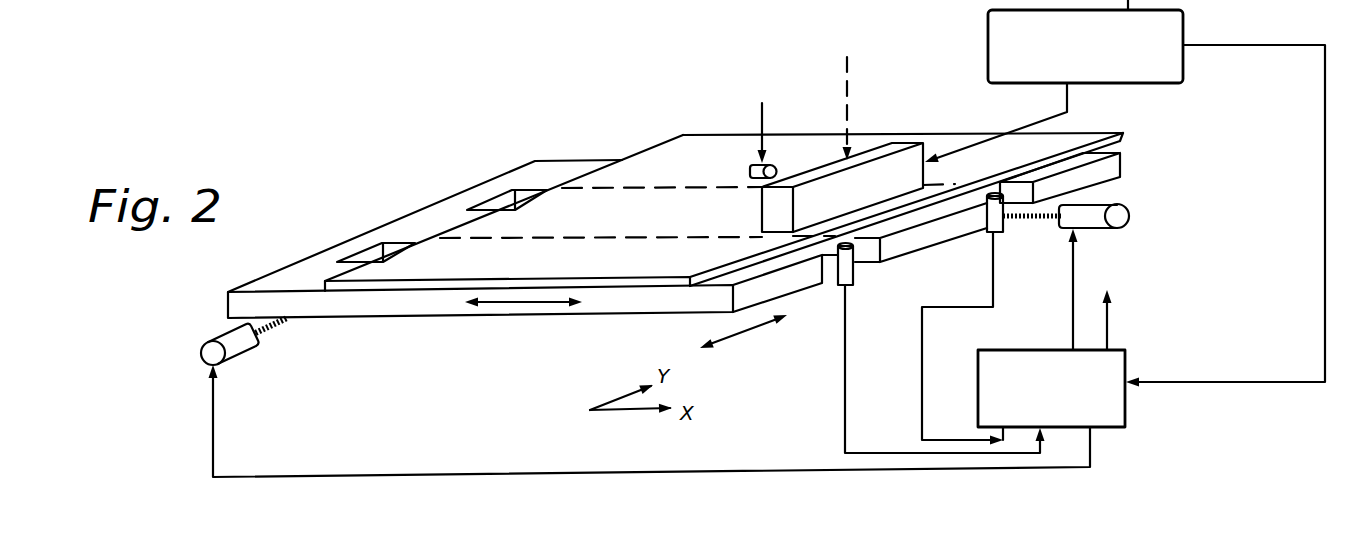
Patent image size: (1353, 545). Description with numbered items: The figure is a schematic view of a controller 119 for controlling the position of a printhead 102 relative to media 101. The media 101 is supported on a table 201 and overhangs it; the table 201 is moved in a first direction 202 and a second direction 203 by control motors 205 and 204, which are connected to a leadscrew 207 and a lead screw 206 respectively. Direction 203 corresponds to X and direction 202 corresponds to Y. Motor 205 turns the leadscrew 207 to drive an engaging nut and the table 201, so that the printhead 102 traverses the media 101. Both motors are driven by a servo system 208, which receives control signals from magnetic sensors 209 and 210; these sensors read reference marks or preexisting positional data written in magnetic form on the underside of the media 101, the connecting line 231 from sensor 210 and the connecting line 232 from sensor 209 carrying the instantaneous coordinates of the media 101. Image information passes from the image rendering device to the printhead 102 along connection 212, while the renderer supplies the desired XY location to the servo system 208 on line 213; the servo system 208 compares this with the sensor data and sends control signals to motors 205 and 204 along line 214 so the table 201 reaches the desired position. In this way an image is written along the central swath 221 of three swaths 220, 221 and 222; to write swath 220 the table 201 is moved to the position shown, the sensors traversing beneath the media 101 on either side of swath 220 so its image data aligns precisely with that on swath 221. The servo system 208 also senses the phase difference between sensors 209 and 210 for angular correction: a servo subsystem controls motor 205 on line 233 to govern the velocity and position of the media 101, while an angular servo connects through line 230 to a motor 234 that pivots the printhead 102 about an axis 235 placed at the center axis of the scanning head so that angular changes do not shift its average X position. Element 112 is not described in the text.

The media 101 is at (1123, 133).
The printhead 102 is at (902, 143).
The rendering element 112 is at (630, 4).
The controller 119 is at (363, 155).
The table 201 is at (333, 310).
The direction 202 is at (750, 330).
The direction 203 is at (515, 313).
The control motor 204 is at (205, 346).
The control motor 205 is at (1129, 216).
The lead screw 206 is at (275, 323).
The leadscrew 207 is at (1030, 222).
The servo system 208 is at (1127, 410).
The magnetic sensor 209 is at (853, 284).
The magnetic sensor 210 is at (973, 231).
The connection 212 is at (1067, 100).
The line 213 is at (1232, 44).
The line 214 is at (1090, 455).
The swath 220 is at (443, 258).
The central swath 221 is at (583, 210).
The swath 222 is at (700, 142).
The line 230 is at (1108, 327).
The connecting line 231 is at (922, 338).
The connecting line 232 is at (845, 399).
The line 233 is at (1073, 275).
The motor 234 is at (752, 172).
The axis 235 is at (762, 103).